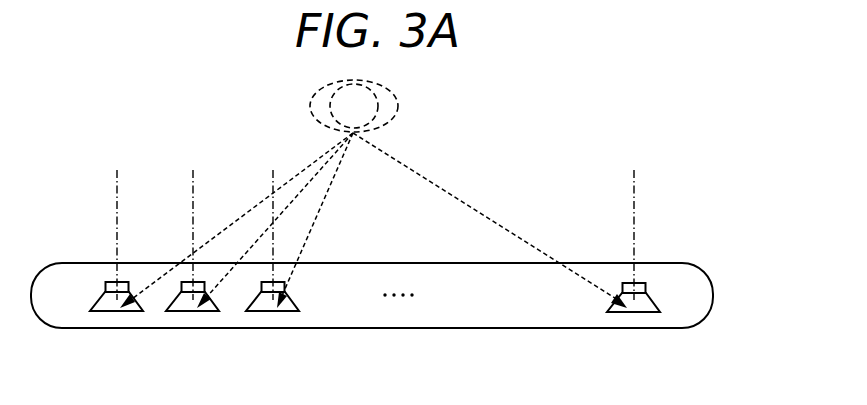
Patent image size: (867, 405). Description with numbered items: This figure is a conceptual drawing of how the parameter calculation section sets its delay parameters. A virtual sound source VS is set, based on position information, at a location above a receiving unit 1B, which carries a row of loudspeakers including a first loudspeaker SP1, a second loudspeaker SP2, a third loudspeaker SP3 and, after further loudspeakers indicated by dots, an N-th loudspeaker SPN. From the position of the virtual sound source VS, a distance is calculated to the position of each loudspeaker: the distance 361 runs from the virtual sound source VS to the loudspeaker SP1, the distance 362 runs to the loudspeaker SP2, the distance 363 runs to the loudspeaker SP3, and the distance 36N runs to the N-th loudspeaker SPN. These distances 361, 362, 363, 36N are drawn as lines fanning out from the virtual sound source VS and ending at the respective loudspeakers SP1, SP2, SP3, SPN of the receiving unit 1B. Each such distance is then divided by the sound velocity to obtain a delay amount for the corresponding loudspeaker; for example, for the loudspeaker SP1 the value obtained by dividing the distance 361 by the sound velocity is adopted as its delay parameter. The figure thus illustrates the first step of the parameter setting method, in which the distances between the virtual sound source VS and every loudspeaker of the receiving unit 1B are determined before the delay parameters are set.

The receiving unit 1B is at (674, 263).
The virtual sound source VS is at (398, 105).
The loudspeaker SP1 is at (128, 312).
The loudspeaker SP2 is at (205, 312).
The loudspeaker SP3 is at (299, 310).
The loudspeaker SPN is at (645, 313).
The distance 361 is at (300, 172).
The distance 362 is at (223, 275).
The distance 363 is at (311, 227).
The distance 36N is at (472, 207).